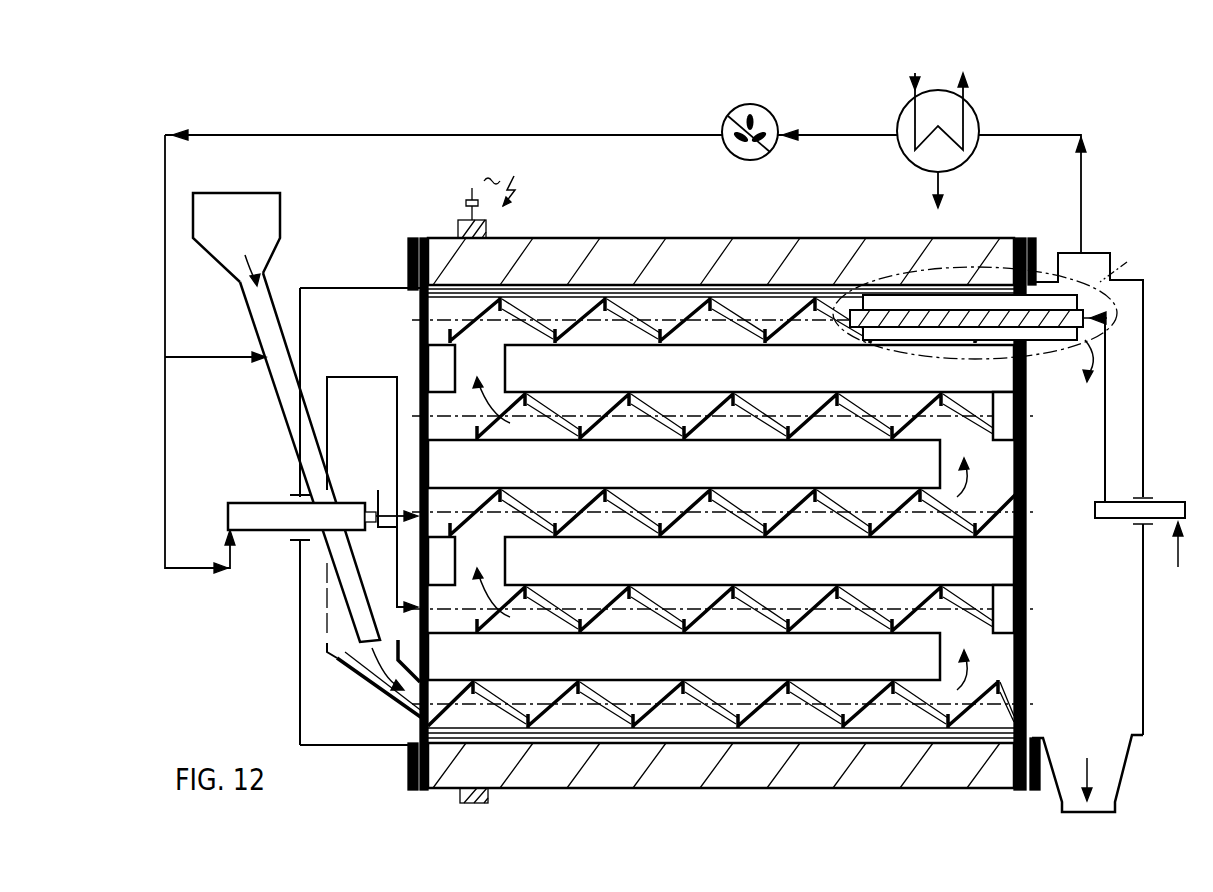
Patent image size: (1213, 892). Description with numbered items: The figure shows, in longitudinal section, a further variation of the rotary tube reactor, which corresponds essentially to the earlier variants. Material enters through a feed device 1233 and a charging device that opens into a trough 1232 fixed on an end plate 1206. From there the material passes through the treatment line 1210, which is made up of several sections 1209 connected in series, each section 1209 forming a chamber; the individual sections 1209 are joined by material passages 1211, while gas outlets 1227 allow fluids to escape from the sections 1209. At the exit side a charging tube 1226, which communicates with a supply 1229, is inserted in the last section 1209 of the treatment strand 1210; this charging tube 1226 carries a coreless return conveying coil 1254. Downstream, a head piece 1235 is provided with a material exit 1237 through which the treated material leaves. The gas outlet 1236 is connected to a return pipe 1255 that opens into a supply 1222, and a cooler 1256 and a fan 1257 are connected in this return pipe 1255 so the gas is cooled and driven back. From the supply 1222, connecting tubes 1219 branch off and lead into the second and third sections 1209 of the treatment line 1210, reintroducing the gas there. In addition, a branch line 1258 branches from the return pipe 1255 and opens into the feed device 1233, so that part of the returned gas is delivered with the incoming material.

The end plate 1206 is at (424, 236).
The section 1209 is at (688, 396).
The treatment line 1210 is at (623, 378).
The wall block 1211 is at (1000, 458).
The connecting tube 1219 is at (385, 508).
The supply 1222 is at (270, 507).
The charging tube 1226 is at (908, 294).
The wall block 1227 is at (1000, 607).
The supply 1229 is at (1160, 501).
The trough 1232 is at (328, 651).
The feed device 1233 is at (287, 389).
The head piece 1235 is at (1144, 631).
The gas outlet 1236 is at (1069, 232).
The material exit 1237 is at (1117, 773).
The coreless return conveying coil 1254 is at (1030, 340).
The return pipe 1255 is at (604, 134).
The cooler 1256 is at (975, 117).
The fan 1257 is at (777, 119).
The branch line 1258 is at (183, 357).